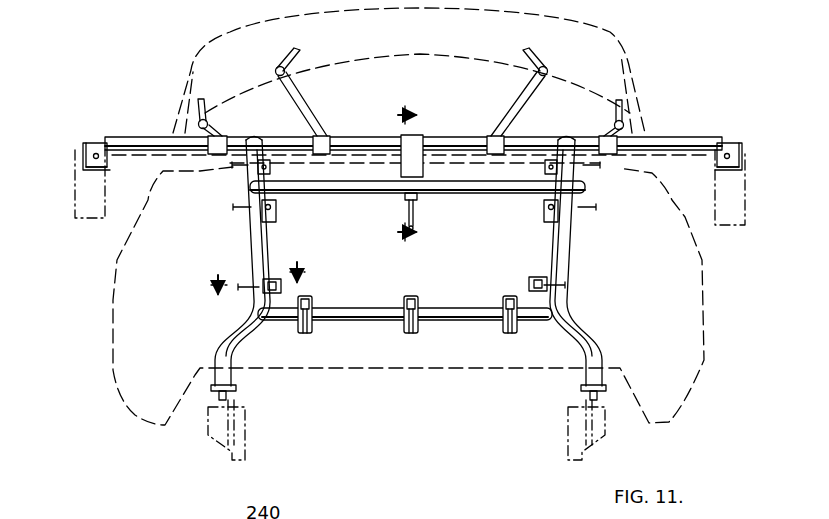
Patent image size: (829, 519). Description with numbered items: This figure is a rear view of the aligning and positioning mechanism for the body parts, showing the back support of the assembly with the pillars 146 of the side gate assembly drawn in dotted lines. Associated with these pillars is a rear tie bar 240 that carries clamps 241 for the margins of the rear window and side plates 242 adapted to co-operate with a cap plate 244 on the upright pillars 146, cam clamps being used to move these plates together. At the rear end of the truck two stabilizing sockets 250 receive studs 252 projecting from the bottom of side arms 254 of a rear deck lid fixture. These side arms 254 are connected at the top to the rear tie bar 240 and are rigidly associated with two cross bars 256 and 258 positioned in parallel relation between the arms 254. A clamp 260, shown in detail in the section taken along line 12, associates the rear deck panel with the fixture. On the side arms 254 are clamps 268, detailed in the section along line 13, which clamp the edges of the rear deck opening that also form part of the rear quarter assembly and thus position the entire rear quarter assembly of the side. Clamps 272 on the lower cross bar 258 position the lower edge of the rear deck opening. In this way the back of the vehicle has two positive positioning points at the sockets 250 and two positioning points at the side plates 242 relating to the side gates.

The rear tie bar 240 is at (682, 138).
The clamps 241 is at (212, 134).
The side plates 242 is at (93, 143).
The cap plate 244 is at (82, 152).
The pillars 146 is at (80, 190).
The side arms 254 is at (249, 248).
The cross bar 256 is at (456, 192).
The cross bar 258 is at (433, 312).
The clamp 260 is at (401, 196).
The clamps 268 is at (273, 280).
The clamps 272 is at (314, 300).
The studs 252 is at (236, 395).
The stabilizing sockets 250 is at (242, 405).
The section line 12- 12 is at (424, 175).
The section line 13- 13 is at (252, 279).